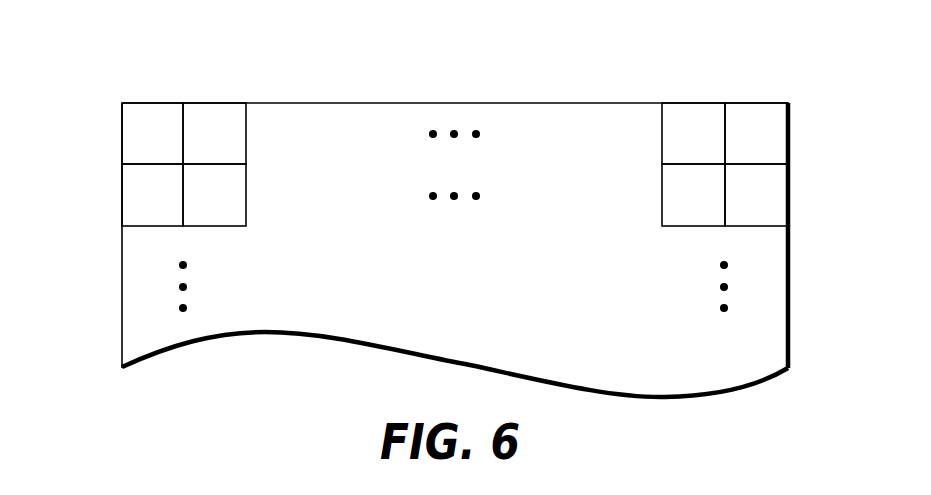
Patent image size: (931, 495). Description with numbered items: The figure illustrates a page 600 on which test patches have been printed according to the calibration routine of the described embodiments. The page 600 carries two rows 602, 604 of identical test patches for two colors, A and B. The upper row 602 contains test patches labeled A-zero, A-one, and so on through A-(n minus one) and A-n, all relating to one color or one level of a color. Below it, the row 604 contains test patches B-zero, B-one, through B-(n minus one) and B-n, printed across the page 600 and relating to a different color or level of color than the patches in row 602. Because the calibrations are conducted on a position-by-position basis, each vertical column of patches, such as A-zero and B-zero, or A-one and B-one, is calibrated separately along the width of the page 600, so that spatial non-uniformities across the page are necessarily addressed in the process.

The page 600 is at (790, 283).
The row 602 is at (122, 134).
The row 604 is at (122, 197).